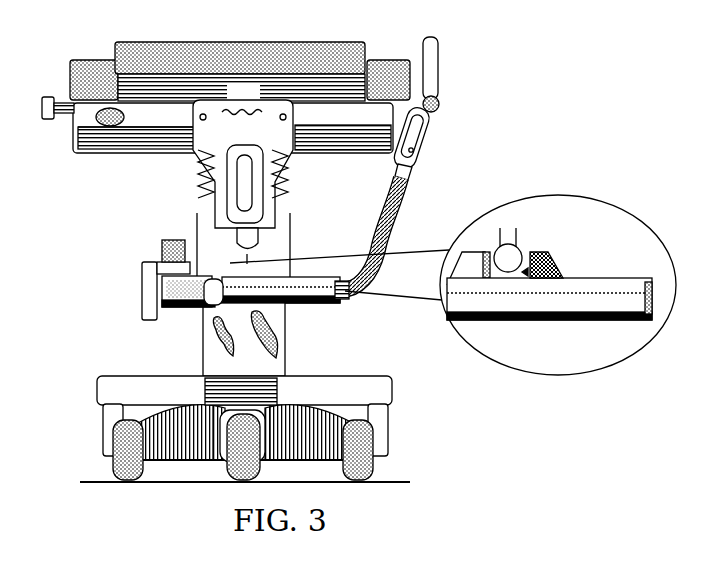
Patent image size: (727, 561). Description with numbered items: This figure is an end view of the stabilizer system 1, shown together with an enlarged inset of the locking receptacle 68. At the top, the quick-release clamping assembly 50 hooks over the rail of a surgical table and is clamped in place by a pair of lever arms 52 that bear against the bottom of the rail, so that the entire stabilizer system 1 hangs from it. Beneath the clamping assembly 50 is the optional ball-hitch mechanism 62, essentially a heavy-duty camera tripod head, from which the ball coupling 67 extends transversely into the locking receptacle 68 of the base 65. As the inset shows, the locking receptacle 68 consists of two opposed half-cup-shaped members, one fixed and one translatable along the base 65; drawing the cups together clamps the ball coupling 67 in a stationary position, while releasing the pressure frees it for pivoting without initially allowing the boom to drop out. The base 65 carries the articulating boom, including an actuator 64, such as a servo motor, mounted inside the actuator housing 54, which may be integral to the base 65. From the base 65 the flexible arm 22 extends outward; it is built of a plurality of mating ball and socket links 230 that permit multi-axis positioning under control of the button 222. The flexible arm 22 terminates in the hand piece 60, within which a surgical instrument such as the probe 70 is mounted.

The stabilizer system 1 is at (482, 80).
The quick-release clamping assembly 50 is at (256, 98).
The lever arms 52 is at (197, 186).
The ball-hitch mechanism 62 is at (262, 239).
The base 65 is at (291, 311).
The actuator housing 54 is at (193, 308).
The actuator 64 is at (142, 318).
The probe 70 is at (438, 40).
The hand piece 60 is at (428, 130).
The button 222 is at (423, 162).
The ball and socket links 230 is at (375, 235).
The flexible arm 22 is at (362, 288).
The locking receptacle 68 is at (549, 274).
The ball coupling 67 is at (518, 230).